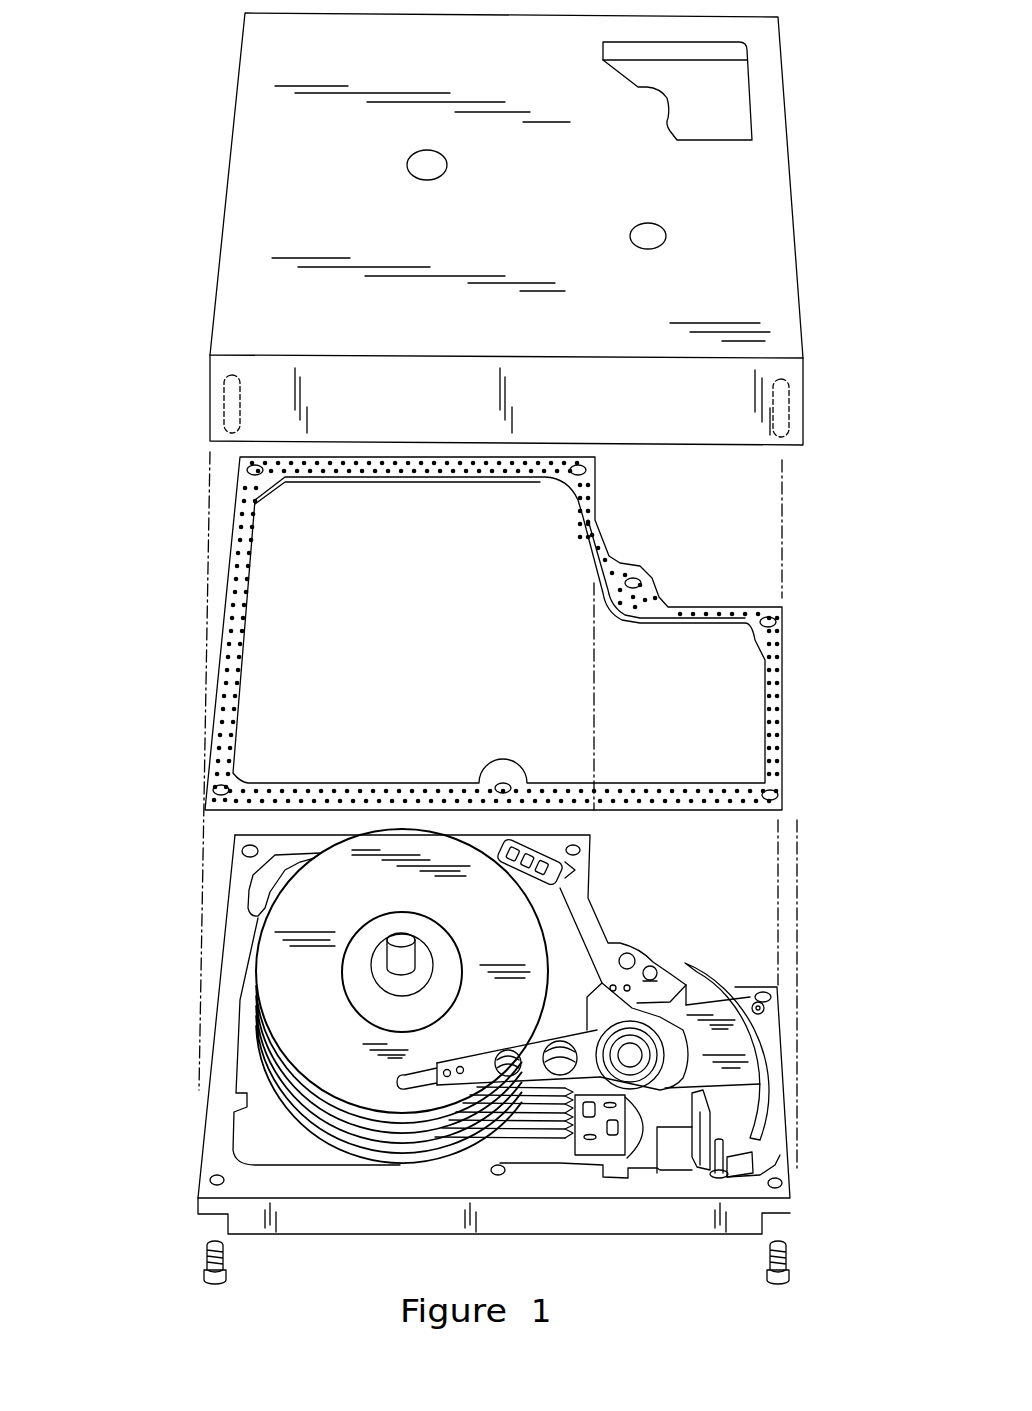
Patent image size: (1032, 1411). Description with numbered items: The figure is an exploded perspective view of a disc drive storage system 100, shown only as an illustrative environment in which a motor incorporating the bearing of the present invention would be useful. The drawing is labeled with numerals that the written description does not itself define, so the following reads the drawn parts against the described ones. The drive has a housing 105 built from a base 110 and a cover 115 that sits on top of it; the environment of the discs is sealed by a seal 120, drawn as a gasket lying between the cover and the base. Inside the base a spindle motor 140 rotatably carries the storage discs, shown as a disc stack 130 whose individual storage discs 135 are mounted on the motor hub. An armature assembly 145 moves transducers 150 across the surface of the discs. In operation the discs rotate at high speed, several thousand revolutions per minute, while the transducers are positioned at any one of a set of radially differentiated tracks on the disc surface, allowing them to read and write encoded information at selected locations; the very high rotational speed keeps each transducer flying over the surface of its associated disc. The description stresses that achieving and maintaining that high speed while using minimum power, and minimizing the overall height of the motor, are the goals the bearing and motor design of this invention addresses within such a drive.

The disc drive 100 is at (177, 73).
The housing 105 is at (803, 98).
The base 110 is at (793, 1097).
The cover 115 is at (793, 202).
The gasket 120 is at (790, 712).
The spindle motor hub 130 is at (377, 972).
The disc 135 is at (265, 915).
The spindle 140 is at (356, 990).
The actuator arm 145 is at (400, 1083).
The flex circuit connector 150 is at (518, 1160).